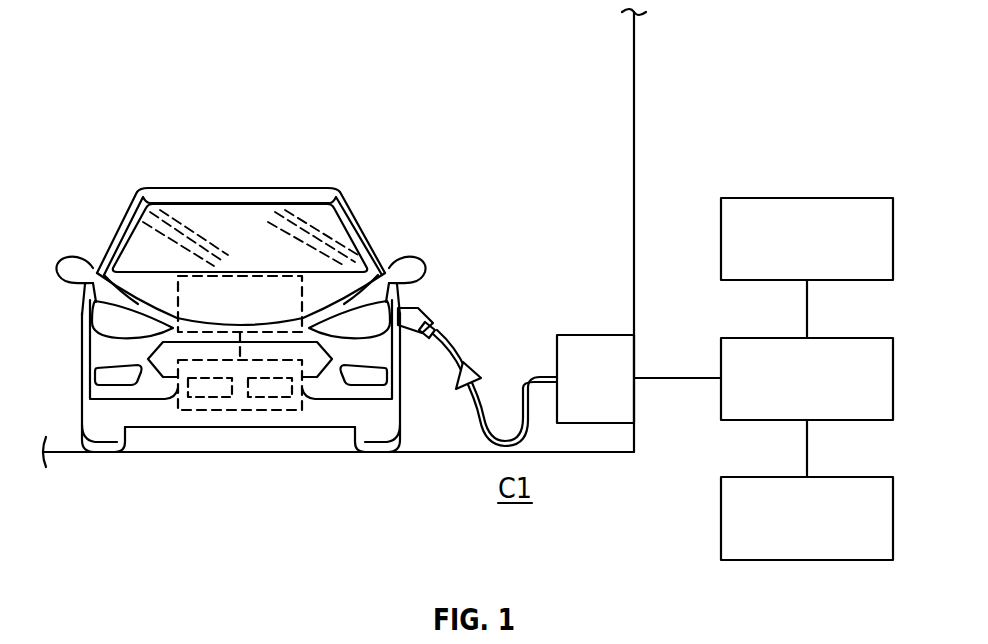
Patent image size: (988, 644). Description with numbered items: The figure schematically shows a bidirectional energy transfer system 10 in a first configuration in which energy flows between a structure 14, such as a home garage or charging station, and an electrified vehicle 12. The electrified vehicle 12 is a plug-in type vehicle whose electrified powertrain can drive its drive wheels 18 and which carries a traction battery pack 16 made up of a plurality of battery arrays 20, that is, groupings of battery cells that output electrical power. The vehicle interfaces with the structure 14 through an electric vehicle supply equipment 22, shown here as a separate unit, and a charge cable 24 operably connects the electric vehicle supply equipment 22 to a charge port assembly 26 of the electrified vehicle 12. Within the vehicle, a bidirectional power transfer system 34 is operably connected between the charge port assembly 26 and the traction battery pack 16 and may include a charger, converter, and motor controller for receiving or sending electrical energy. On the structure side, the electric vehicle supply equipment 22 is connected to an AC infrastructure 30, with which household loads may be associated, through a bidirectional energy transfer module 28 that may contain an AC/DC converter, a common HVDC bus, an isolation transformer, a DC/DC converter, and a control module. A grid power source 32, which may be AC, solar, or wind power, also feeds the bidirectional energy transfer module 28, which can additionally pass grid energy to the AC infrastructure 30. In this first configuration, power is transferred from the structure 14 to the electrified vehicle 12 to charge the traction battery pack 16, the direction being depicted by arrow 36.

The bidirectional energy transfer system 10 is at (178, 41).
The electrified vehicle 12 is at (255, 151).
The structure 14 is at (634, 122).
The traction battery pack 16 is at (220, 412).
The drive wheels 18 is at (102, 447).
The battery arrays 20 is at (192, 400).
The electric vehicle supply equipment (EVSE) 22 is at (583, 335).
The charge cable 24 is at (491, 432).
The charge port assembly 26 is at (418, 297).
The bidirectional energy transfer module 28 is at (776, 338).
The AC infrastructure 30 is at (776, 198).
The grid power source 32 is at (776, 477).
The bidirectional power transfer system 34 is at (232, 275).
The arrow 36 is at (466, 368).